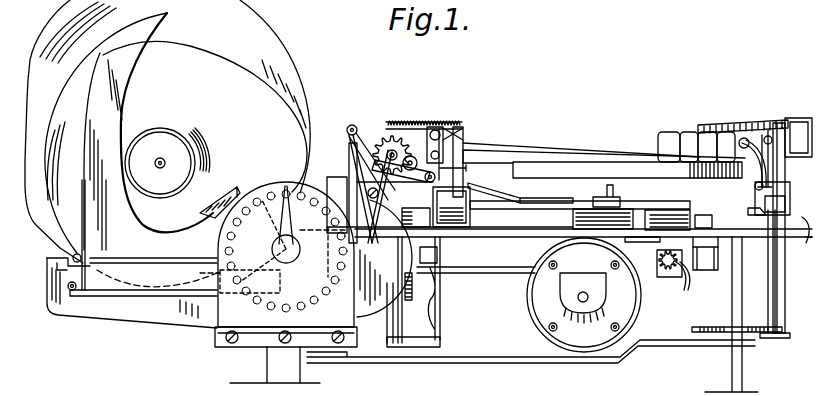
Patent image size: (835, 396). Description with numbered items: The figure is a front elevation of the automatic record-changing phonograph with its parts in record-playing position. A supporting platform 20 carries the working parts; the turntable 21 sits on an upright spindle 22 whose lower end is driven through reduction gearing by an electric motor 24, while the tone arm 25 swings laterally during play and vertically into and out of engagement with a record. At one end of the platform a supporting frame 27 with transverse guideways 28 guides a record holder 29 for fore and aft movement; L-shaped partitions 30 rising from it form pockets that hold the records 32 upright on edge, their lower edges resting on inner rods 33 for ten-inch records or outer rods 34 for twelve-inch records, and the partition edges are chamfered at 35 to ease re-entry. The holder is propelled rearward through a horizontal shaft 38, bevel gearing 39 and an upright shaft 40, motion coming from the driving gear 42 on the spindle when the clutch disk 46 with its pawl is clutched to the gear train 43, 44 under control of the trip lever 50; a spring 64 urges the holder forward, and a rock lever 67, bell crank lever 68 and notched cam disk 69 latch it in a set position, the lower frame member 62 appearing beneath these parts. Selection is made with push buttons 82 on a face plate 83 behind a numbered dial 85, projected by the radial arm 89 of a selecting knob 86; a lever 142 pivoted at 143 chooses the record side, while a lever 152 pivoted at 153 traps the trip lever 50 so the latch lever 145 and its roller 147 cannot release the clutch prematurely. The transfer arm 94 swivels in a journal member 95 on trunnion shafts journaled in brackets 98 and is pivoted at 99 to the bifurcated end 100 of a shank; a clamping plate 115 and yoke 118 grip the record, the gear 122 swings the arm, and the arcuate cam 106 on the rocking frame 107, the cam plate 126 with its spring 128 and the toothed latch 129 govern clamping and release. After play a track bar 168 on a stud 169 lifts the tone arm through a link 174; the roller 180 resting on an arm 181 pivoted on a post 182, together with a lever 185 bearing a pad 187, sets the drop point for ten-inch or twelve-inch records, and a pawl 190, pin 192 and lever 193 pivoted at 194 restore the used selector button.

The supporting platform 20 is at (487, 229).
The turntable 21 is at (535, 172).
The upright shaft or spindle 22 is at (633, 201).
The electric motor 24 is at (573, 273).
The tone arm 25 is at (687, 132).
The supporting frame 27 is at (93, 312).
The guideways or tracks 28 is at (52, 260).
The record holder 29 is at (147, 290).
The division plates or partitions 30 is at (125, 102).
The records 32 is at (230, 57).
The transverse rods 33 is at (92, 262).
The transverse rods 34 is at (82, 258).
The chamfer 35 is at (165, 16).
The horizontal shaft 38 is at (503, 273).
The bevel gearing 39 is at (680, 288).
The upright shaft 40 is at (665, 268).
The clutch-controlled driving gear 42 is at (407, 300).
The gear 43 is at (603, 221).
The gear 44 is at (650, 237).
The clutch disk 46 is at (450, 205).
The trip lever 50 is at (682, 210).
The rail 62 is at (517, 363).
The spring 64 is at (712, 333).
The rock lever 67 is at (422, 347).
The bell crank lever 68 is at (440, 290).
The notched cam disk 69 is at (437, 252).
The push buttons 82 is at (233, 213).
The face plate 83 is at (278, 264).
The dial 85 is at (282, 307).
The selecting knob 86 is at (296, 254).
The radial arm 89 is at (285, 182).
The transfer arm 94 is at (497, 145).
The journal member 95 is at (441, 122).
The brackets 98 is at (381, 215).
The pivot 99 is at (437, 143).
The bifurcated end 100 is at (461, 140).
The arcuate cam member 106 is at (362, 140).
The rocking beam or frame 107 is at (368, 128).
The record-clamping plate 115 is at (633, 160).
The yoke 118 is at (522, 148).
The gear 122 is at (383, 135).
The cam plate 126 is at (352, 185).
The spring 128 is at (416, 122).
The toothed latch 129 is at (464, 172).
The horizontally-swinging lever 142 is at (776, 204).
The pivot 143 is at (753, 182).
The latch lever 145 is at (741, 203).
The latch lever roller 147 is at (710, 217).
The horizontally-swinging lever 152 is at (503, 197).
The pivot 153 is at (548, 193).
The track bar 168 is at (742, 247).
The stud 169 is at (790, 240).
The link 174 is at (762, 135).
The abutment or roller 180 is at (746, 140).
The vertically-swinging arm 181 is at (776, 127).
The post 182 is at (802, 122).
The vertically-swinging lever 185 is at (779, 288).
The pad 187 is at (752, 138).
The pawl 190 is at (448, 128).
The pin 192 is at (396, 125).
The vertically swinging lever 193 is at (372, 128).
The pivot 194 is at (365, 232).